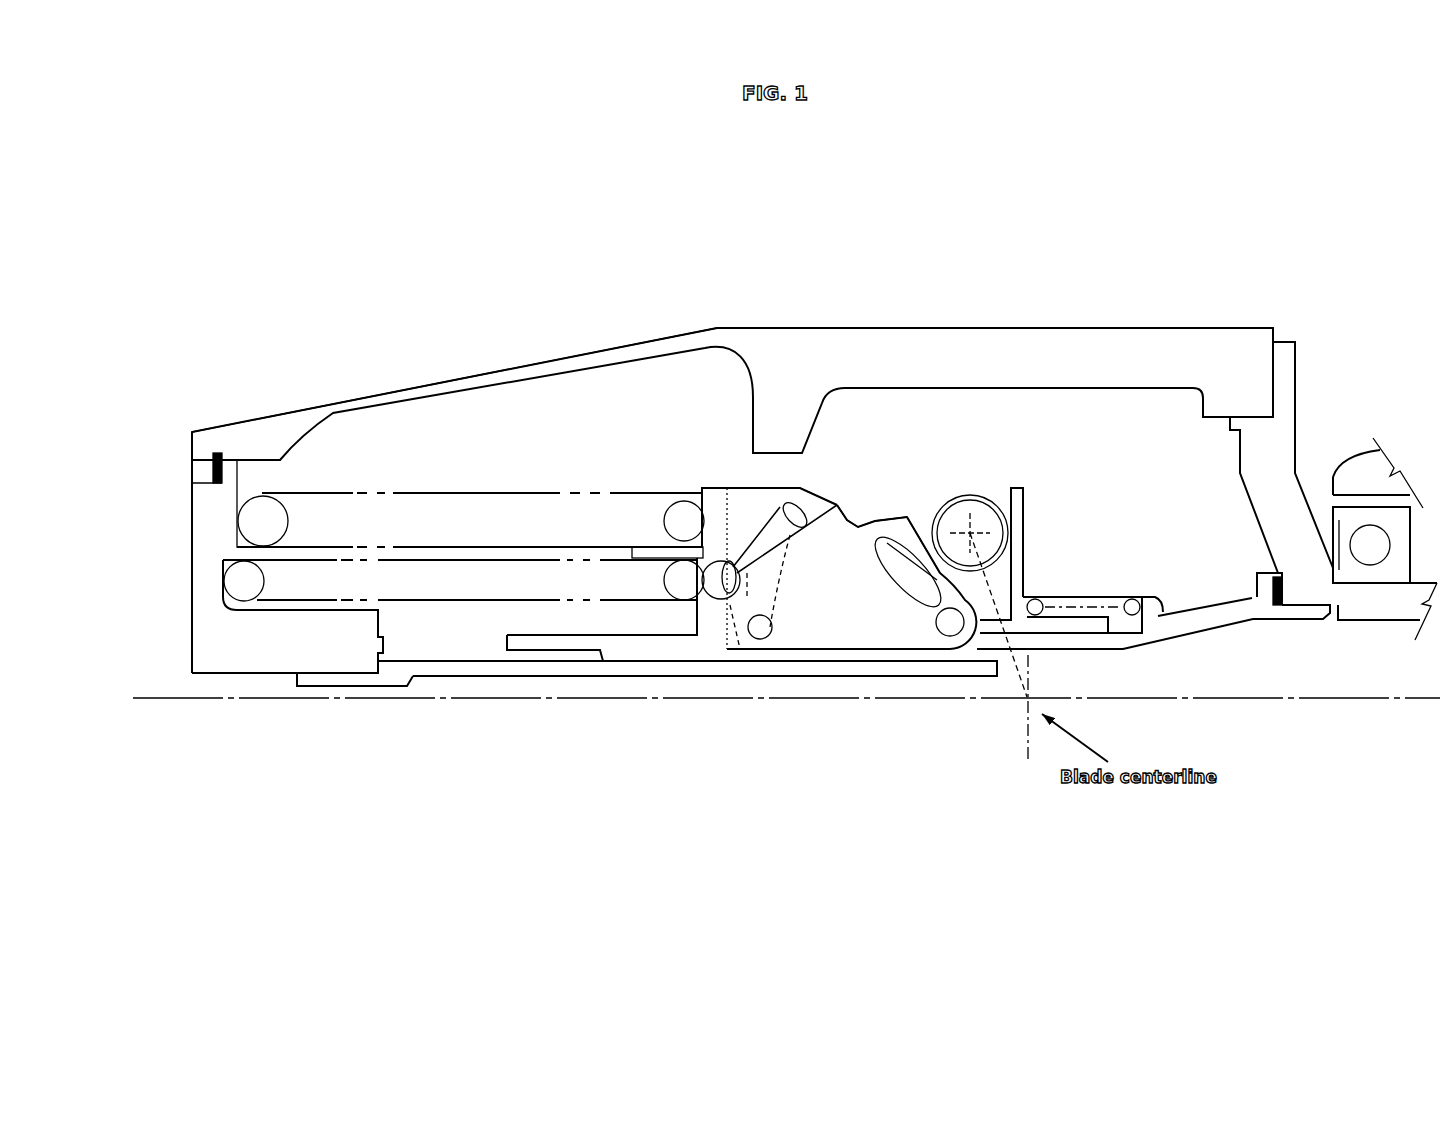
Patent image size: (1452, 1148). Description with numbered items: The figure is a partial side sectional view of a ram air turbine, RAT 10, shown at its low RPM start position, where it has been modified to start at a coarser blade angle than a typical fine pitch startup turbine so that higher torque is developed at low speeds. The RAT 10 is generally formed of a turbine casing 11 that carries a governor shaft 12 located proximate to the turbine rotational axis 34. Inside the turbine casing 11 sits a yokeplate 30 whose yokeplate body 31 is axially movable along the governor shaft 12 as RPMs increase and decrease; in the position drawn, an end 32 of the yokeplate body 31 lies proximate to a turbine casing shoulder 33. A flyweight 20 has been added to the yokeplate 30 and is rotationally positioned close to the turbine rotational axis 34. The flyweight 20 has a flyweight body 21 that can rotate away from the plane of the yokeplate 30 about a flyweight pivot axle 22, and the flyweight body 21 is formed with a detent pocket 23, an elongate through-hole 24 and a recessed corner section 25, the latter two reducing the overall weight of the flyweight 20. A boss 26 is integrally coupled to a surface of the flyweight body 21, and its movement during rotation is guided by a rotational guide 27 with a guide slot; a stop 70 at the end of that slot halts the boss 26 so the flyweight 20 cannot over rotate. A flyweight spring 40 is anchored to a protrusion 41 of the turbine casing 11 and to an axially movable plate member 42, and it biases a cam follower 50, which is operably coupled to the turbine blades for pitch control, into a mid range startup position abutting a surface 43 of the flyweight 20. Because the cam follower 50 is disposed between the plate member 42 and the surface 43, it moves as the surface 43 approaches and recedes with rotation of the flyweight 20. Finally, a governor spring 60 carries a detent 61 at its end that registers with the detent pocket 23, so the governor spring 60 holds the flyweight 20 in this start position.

The RAT 10 is at (478, 298).
The turbine casing 11 is at (1243, 352).
The governor shaft 12 is at (1209, 640).
The flyweight 20 is at (826, 533).
The flyweight body 21 is at (851, 577).
The flyweight pivot axle 22 is at (946, 640).
The detent pocket 23 is at (731, 568).
The elongate through-hole 24 is at (903, 595).
The recessed corner section 25 is at (870, 520).
The boss 26 is at (767, 630).
The rotational guide 27 is at (740, 486).
The yokeplate 30 is at (685, 653).
The yokeplate body 31 is at (630, 645).
The end of the yokeplate body 32 is at (972, 648).
The turbine casing shoulder 33 is at (992, 643).
The turbine rotational axis 34 is at (290, 707).
The flyweight spring 40 is at (1091, 596).
The protrusion 41 is at (1155, 597).
The plate member 42 is at (1017, 487).
The surface 43 is at (927, 540).
The cam follower 50 is at (983, 488).
The governor spring 60 is at (454, 606).
The detent 61 is at (719, 553).
The stop 70 is at (791, 500).